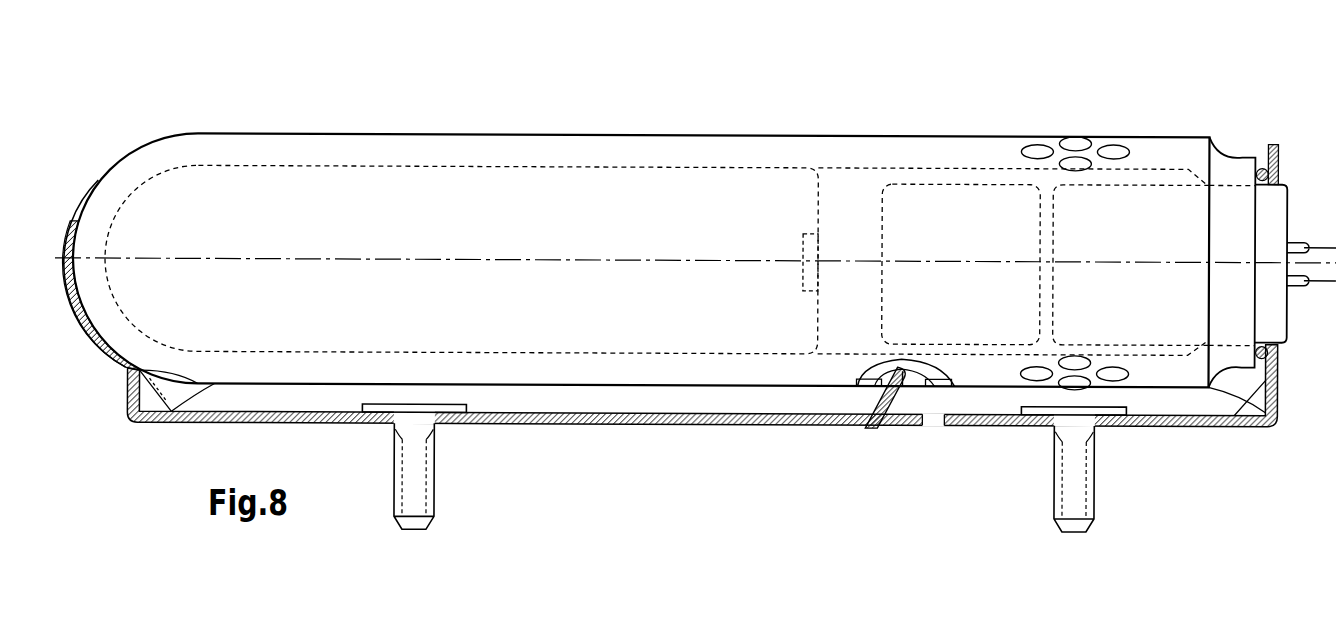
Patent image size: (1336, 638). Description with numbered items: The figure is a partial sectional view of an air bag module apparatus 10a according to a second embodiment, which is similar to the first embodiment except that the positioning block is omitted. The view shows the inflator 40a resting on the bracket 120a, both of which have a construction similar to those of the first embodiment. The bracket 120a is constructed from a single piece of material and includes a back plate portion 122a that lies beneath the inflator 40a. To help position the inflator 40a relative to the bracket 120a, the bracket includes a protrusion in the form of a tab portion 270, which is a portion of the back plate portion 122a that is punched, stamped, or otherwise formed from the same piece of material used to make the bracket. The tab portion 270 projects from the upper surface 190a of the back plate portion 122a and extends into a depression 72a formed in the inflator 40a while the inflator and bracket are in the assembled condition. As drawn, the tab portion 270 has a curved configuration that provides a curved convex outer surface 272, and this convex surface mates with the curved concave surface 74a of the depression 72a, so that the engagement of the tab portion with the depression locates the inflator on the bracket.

The apparatus 10a is at (286, 88).
The inflator 40a is at (550, 390).
The bracket 120a is at (615, 428).
The back plate portion 122a is at (720, 424).
The upper surface 190a is at (639, 410).
The depression 72a is at (887, 369).
The curved convex outer surface 272 is at (878, 373).
The tab portion 270 is at (878, 394).
The curved concave surface 74a is at (908, 380).